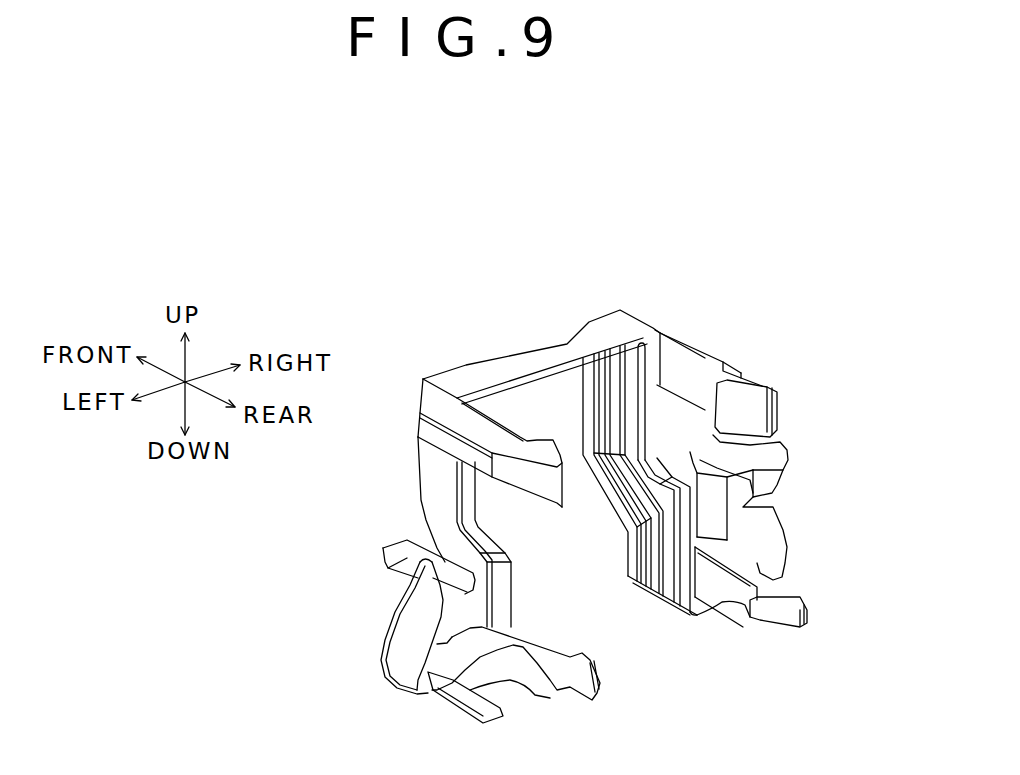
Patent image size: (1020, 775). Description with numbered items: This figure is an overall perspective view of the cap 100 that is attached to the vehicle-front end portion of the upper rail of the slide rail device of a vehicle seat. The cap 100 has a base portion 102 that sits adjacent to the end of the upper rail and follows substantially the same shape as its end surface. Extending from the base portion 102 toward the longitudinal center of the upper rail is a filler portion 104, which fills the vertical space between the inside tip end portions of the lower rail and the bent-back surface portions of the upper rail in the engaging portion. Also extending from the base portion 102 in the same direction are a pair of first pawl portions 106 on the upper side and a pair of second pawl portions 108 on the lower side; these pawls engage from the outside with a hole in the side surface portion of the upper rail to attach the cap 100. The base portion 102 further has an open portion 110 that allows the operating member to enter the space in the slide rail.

The cap 100 is at (414, 352).
The base portion 102 is at (527, 366).
The filler portion 104 is at (483, 673).
The first pawl portions 106 is at (552, 435).
The second pawl portions 108 is at (585, 657).
The open portion 110 is at (530, 525).